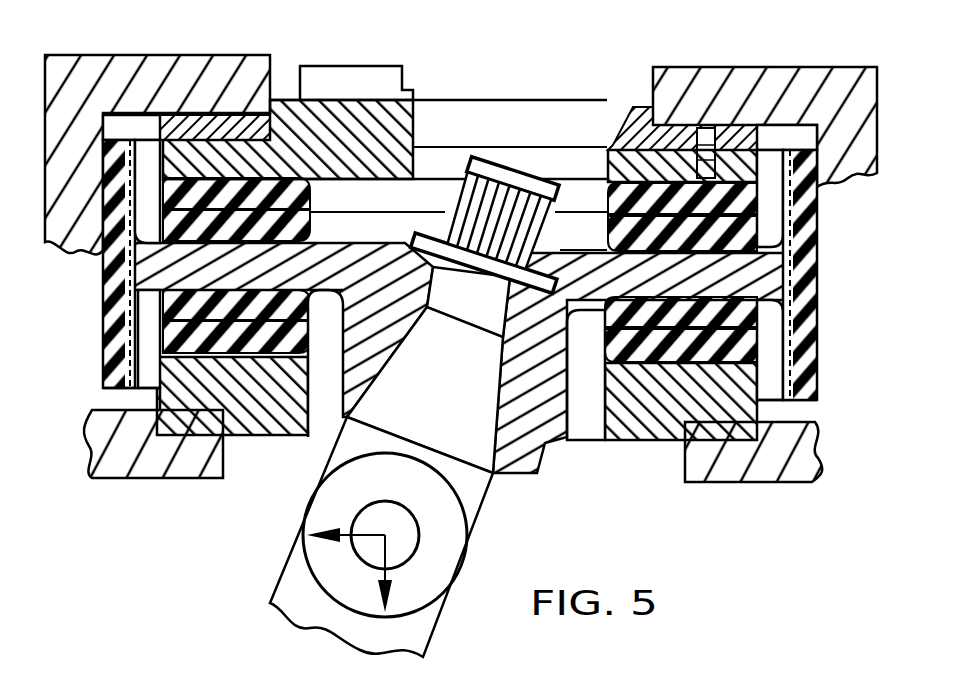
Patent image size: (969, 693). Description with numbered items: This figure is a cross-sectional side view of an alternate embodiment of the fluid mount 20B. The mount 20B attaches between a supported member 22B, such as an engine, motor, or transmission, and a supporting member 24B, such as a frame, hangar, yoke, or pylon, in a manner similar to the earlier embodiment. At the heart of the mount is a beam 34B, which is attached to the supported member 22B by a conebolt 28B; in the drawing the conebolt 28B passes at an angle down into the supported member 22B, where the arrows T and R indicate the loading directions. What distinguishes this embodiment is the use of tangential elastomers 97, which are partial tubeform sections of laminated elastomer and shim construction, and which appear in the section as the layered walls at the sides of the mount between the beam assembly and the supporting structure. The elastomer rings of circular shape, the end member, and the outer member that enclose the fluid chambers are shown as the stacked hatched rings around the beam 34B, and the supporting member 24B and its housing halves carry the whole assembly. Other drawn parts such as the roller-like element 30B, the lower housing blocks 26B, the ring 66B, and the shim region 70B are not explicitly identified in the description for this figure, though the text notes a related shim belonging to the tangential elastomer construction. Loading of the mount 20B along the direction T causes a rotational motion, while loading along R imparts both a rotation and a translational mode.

The fluid mount 20B is at (205, 85).
The supporting member 24B is at (790, 68).
The bearing ring 66B is at (703, 128).
The beam 34B is at (695, 286).
The cartridge wall 70B is at (817, 357).
The tangential elastomer 97 is at (817, 260).
The conebolt 28B is at (487, 478).
The roller 30B is at (460, 170).
The lower housing block 26B is at (148, 458).
The supported member 22B is at (283, 577).